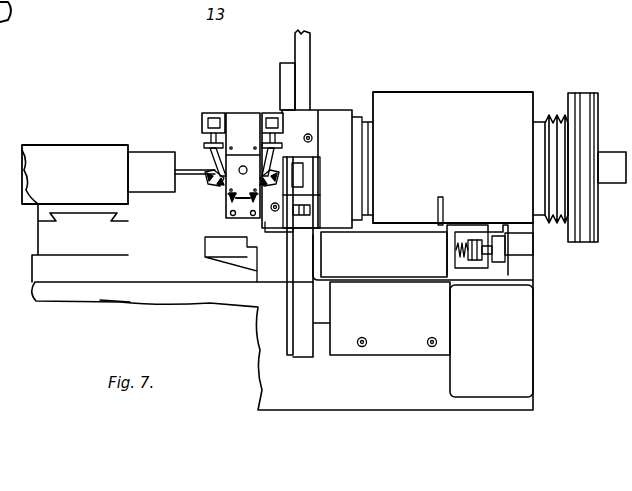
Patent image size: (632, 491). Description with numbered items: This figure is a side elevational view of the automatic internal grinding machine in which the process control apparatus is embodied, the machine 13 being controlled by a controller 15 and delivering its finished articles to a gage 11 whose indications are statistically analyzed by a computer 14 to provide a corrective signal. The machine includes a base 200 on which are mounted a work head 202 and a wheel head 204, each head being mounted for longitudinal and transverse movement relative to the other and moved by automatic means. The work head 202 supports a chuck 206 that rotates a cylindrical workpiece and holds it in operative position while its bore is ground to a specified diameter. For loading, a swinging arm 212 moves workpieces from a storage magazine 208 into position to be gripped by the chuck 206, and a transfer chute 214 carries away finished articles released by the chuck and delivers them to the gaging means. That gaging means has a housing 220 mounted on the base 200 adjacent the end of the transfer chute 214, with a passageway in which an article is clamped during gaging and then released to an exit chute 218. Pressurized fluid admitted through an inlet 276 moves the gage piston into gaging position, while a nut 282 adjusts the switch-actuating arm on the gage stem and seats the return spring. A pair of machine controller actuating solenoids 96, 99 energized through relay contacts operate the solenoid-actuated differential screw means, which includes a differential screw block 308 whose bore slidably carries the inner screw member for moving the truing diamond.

The gage 11 is at (392, 287).
The machine 13 is at (105, 309).
The computer 14 is at (467, 352).
The controller 15 is at (224, 202).
The machine controller actuating solenoid 96 is at (205, 126).
The machine controller actuating solenoid 99 is at (275, 112).
The base 200 is at (156, 283).
The work head 202 is at (460, 85).
The wheel head 204 is at (97, 150).
The chuck 206 is at (352, 93).
The storage magazine 208 is at (295, 38).
The swinging arm 212 is at (283, 75).
The transfer chute 214 is at (287, 198).
The exit chute 218 is at (298, 357).
The housing 220 is at (393, 237).
The inlet 276 is at (442, 198).
The nut 282 is at (473, 237).
The differential screw block 308 is at (236, 112).